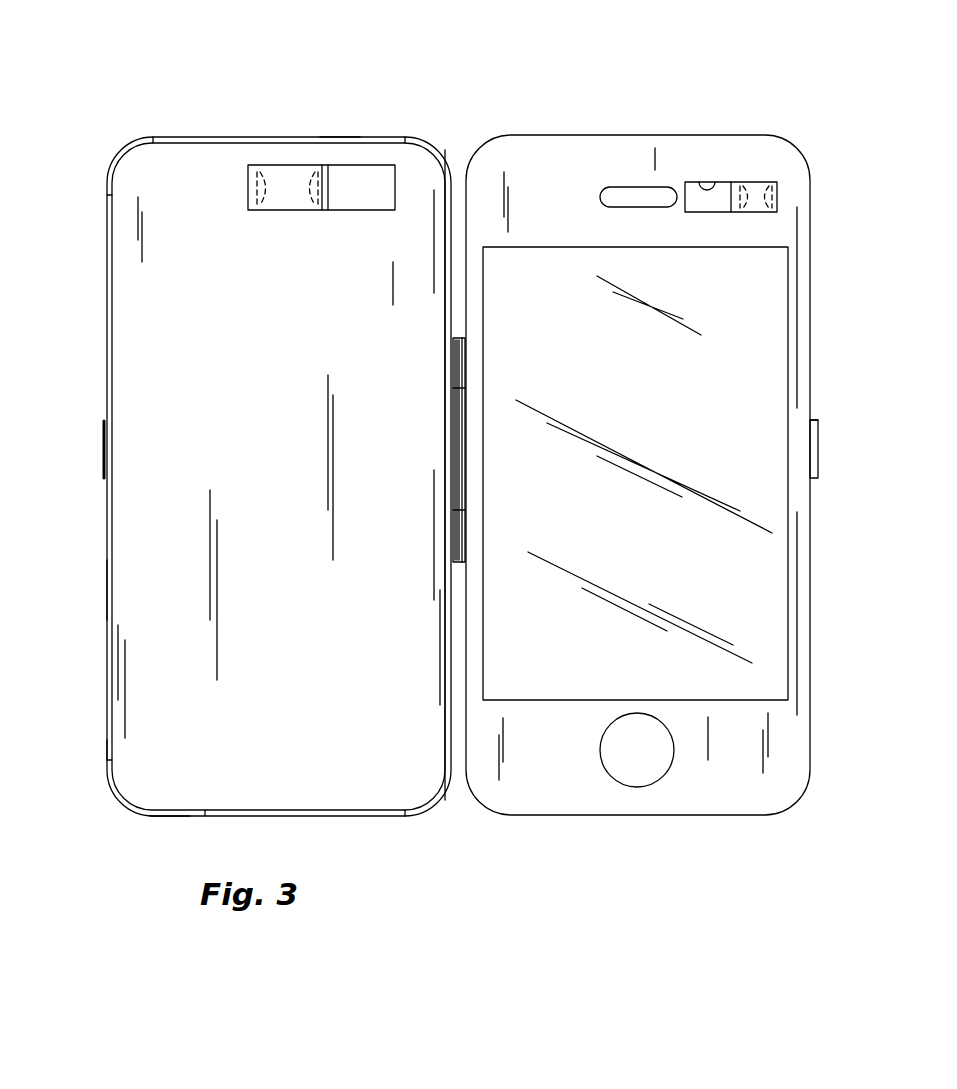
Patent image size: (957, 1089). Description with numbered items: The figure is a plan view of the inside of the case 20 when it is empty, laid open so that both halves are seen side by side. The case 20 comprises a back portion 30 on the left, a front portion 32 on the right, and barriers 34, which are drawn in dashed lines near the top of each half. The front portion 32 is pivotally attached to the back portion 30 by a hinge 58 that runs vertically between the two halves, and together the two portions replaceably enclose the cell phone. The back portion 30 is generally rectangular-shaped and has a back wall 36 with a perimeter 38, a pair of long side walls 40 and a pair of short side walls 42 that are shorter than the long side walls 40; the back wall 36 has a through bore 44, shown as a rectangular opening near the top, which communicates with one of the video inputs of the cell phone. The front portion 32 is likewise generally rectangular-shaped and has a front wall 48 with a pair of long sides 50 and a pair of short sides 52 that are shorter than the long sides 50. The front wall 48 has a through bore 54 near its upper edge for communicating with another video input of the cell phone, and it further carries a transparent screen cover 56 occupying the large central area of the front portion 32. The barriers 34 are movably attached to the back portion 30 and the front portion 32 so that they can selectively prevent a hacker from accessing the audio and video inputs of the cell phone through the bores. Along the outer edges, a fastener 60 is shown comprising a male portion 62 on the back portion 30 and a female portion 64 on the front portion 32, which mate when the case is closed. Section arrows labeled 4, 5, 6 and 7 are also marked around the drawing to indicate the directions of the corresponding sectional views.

The section line 4- 4 is at (458, 96).
The section line 5- 5 is at (834, 443).
The section line 6- 6 is at (95, 443).
The section line 7- 7 is at (458, 834).
The case 20 is at (100, 121).
The back portion 30 is at (212, 128).
The front portion 32 is at (611, 156).
The barriers 34 is at (287, 157).
The back wall 36 is at (170, 255).
The perimeter 38 is at (105, 582).
The long side walls 40 is at (97, 752).
The short side walls 42 is at (328, 128).
The through bore 44 is at (392, 192).
The front wall 48 is at (541, 188).
The long sides 50 is at (466, 253).
The short sides 52 is at (656, 133).
The through bore 54 is at (707, 188).
The transparent screen cover 56 is at (727, 575).
The hinge 58 is at (455, 350).
The fastener 60 is at (824, 473).
The male portion 62 is at (104, 457).
The female portion 64 is at (818, 430).